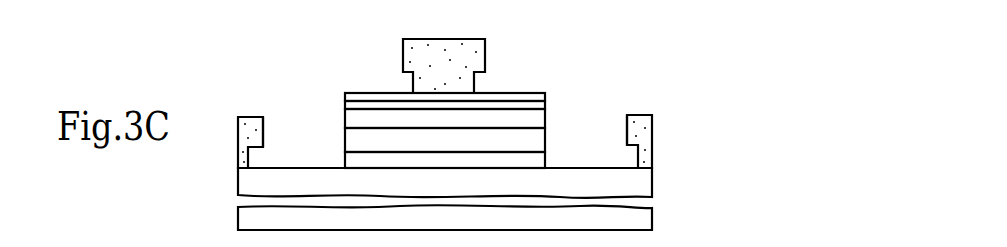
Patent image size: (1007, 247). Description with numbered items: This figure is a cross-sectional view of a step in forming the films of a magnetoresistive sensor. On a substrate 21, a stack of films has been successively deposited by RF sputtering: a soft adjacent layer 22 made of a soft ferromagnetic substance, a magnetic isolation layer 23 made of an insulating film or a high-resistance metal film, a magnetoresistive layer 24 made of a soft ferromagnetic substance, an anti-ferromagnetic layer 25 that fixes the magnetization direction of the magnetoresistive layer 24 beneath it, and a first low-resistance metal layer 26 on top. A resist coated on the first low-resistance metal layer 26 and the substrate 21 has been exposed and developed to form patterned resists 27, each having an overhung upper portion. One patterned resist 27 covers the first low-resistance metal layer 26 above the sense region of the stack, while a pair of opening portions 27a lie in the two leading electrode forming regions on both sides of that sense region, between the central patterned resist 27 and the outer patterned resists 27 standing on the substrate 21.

The substrate 21 is at (645, 183).
The soft adjacent layer 22 is at (538, 162).
The magnetic isolation layer 23 is at (345, 140).
The magnetoresistive layer 24 is at (538, 122).
The anti-ferromagnetic layer 25 is at (345, 105).
The first low-resistance metal layer 26 is at (373, 97).
The patterned resist 27 is at (475, 60).
The opening portion 27a is at (263, 133).